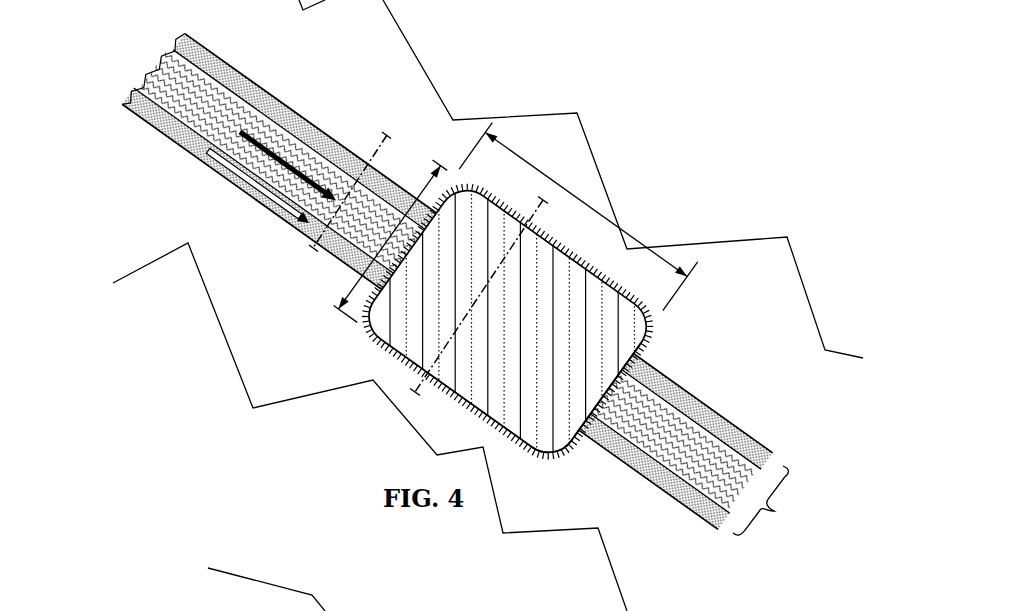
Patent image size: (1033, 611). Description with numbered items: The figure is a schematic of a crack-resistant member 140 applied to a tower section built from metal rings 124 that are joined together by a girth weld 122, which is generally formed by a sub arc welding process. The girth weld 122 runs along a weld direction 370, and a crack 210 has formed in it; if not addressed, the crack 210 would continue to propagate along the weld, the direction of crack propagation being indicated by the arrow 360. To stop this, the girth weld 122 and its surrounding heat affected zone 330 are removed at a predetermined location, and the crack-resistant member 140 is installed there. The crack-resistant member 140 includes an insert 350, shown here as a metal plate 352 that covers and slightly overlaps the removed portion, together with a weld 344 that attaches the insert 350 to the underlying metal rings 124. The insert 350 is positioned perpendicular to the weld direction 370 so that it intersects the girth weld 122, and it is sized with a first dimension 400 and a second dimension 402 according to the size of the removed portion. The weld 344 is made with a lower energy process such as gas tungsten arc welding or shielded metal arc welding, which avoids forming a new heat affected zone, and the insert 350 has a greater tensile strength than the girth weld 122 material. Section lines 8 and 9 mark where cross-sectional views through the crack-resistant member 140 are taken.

The metal ring 124 is at (328, 86).
The crack 210 is at (182, 77).
The crack propagation 360 is at (230, 181).
The weld direction 370 is at (282, 138).
The heat affected zone 330 is at (730, 398).
The insert 350 is at (613, 263).
The metal plate 352 is at (652, 327).
The weld 344 is at (553, 453).
The girth weld 122 is at (778, 512).
The second dimension 402 is at (580, 197).
The first dimension 400 is at (417, 183).
The crack-resistant member 140 is at (717, 197).
The section line 8- 8 is at (391, 140).
The section line 9- 9 is at (551, 205).